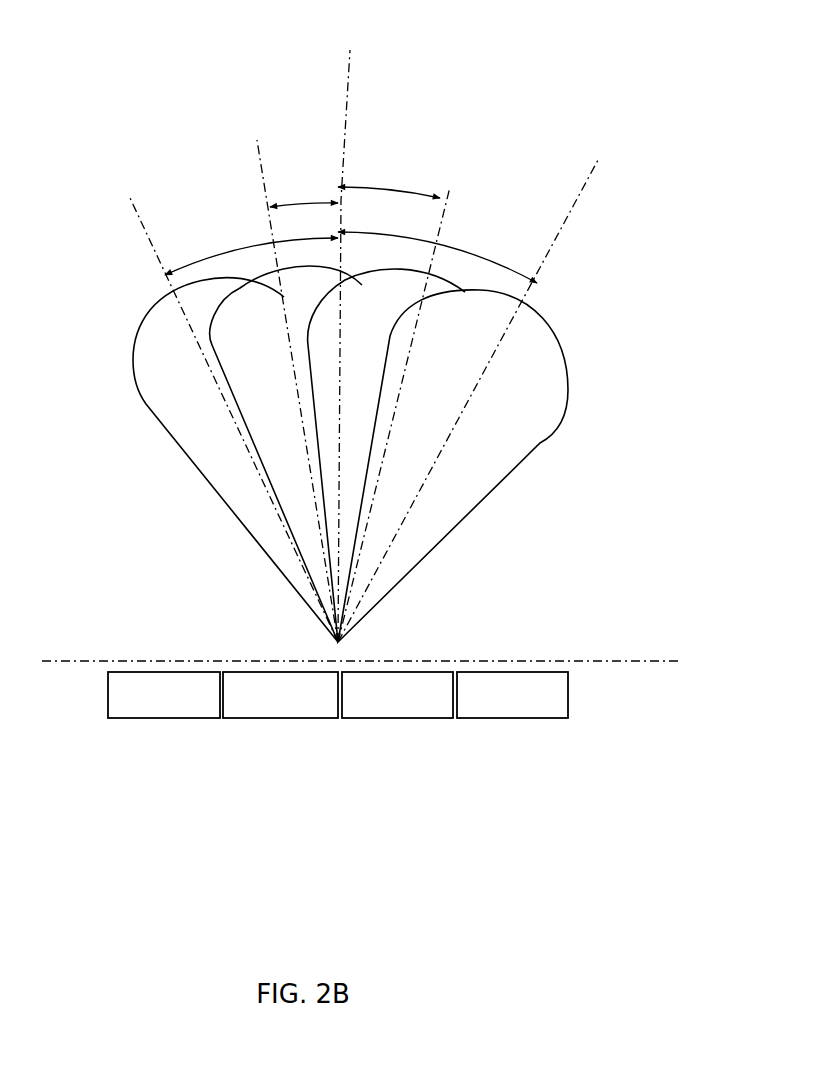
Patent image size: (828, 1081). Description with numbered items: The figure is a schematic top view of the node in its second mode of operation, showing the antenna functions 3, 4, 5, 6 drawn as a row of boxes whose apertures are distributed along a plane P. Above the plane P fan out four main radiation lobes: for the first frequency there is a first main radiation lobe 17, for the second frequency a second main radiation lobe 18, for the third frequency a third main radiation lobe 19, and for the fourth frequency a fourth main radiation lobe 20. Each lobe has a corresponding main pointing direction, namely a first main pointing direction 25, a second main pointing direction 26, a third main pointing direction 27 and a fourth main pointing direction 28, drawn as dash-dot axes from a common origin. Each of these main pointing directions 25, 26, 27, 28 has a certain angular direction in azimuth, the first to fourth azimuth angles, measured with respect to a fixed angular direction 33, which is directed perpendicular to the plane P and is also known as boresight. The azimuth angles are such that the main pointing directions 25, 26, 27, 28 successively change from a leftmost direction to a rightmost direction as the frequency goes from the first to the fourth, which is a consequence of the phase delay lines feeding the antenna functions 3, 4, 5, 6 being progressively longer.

The antenna function 3 is at (158, 718).
The antenna function 4 is at (277, 718).
The antenna function 5 is at (407, 718).
The antenna function 6 is at (527, 718).
The first main radiation lobe 17 is at (207, 460).
The second main radiation lobe 18 is at (257, 397).
The third main radiation lobe 19 is at (373, 363).
The fourth main radiation lobe 20 is at (487, 453).
The first main pointing direction 25 is at (153, 248).
The second main pointing direction 26 is at (268, 200).
The third main pointing direction 27 is at (450, 187).
The fourth main pointing direction 28 is at (554, 250).
The fixed angular direction 33 is at (352, 332).
The plane P is at (627, 658).